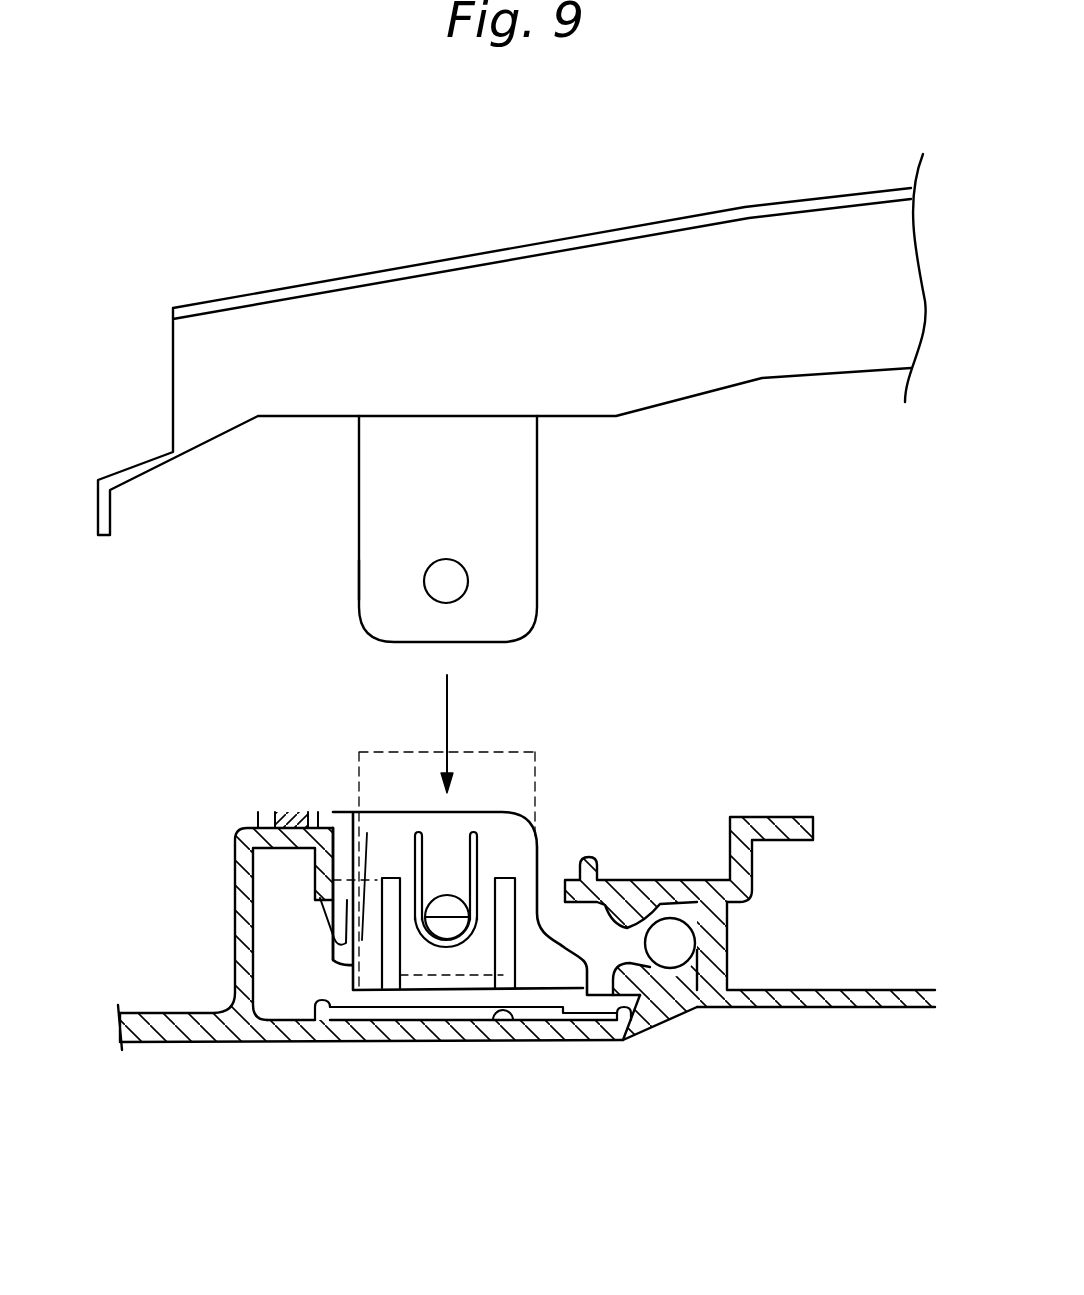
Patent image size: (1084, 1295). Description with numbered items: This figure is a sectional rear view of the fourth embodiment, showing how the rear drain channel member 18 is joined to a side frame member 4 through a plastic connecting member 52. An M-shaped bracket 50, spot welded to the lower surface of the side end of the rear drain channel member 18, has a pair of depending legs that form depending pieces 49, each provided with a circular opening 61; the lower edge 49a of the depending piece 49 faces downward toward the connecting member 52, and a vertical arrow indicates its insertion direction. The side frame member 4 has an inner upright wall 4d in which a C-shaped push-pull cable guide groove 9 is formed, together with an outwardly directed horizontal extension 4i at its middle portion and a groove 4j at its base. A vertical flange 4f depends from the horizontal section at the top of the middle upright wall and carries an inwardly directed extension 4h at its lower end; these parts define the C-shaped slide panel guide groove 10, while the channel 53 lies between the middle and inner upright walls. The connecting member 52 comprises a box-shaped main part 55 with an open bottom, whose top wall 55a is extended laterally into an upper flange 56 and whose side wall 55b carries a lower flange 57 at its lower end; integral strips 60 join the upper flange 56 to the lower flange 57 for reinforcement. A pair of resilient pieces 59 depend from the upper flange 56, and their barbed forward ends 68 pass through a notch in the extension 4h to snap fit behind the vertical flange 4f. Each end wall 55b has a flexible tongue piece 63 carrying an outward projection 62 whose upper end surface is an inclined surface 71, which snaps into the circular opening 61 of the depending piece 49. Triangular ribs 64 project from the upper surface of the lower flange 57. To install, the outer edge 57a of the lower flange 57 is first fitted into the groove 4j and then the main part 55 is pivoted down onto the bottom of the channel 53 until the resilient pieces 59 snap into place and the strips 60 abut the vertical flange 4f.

The rear drain channel member 18 is at (597, 232).
The depending piece 49 is at (517, 498).
The tab edge 49a is at (359, 577).
The bracket 50 is at (349, 454).
The circular opening 61 is at (452, 598).
The inclined surface 71 is at (455, 875).
The side frame member 4 is at (216, 1050).
The inner upright wall 4d is at (720, 970).
The vertical flange 4f is at (330, 900).
The inwardly directed extension 4h is at (317, 910).
The horizontal extension 4i is at (660, 880).
The groove 4j is at (623, 1042).
The push-pull cable guide groove 9 is at (693, 925).
The slide panel guide groove 10 is at (255, 866).
The connecting member 52 is at (505, 803).
The channel 53 is at (506, 1022).
The main part 55 is at (540, 852).
The top wall 55a is at (408, 823).
The side wall 55b is at (393, 823).
The upper flange 56 is at (272, 812).
The lower flange 57 is at (372, 1015).
The outer edge 57a is at (637, 1013).
The resilient piece 59 is at (367, 850).
The integral strip 60 is at (337, 973).
The projection 62 is at (448, 927).
The tongue piece 63 is at (463, 880).
The triangular rib 64 is at (395, 945).
The barbed forward end 68 is at (337, 927).